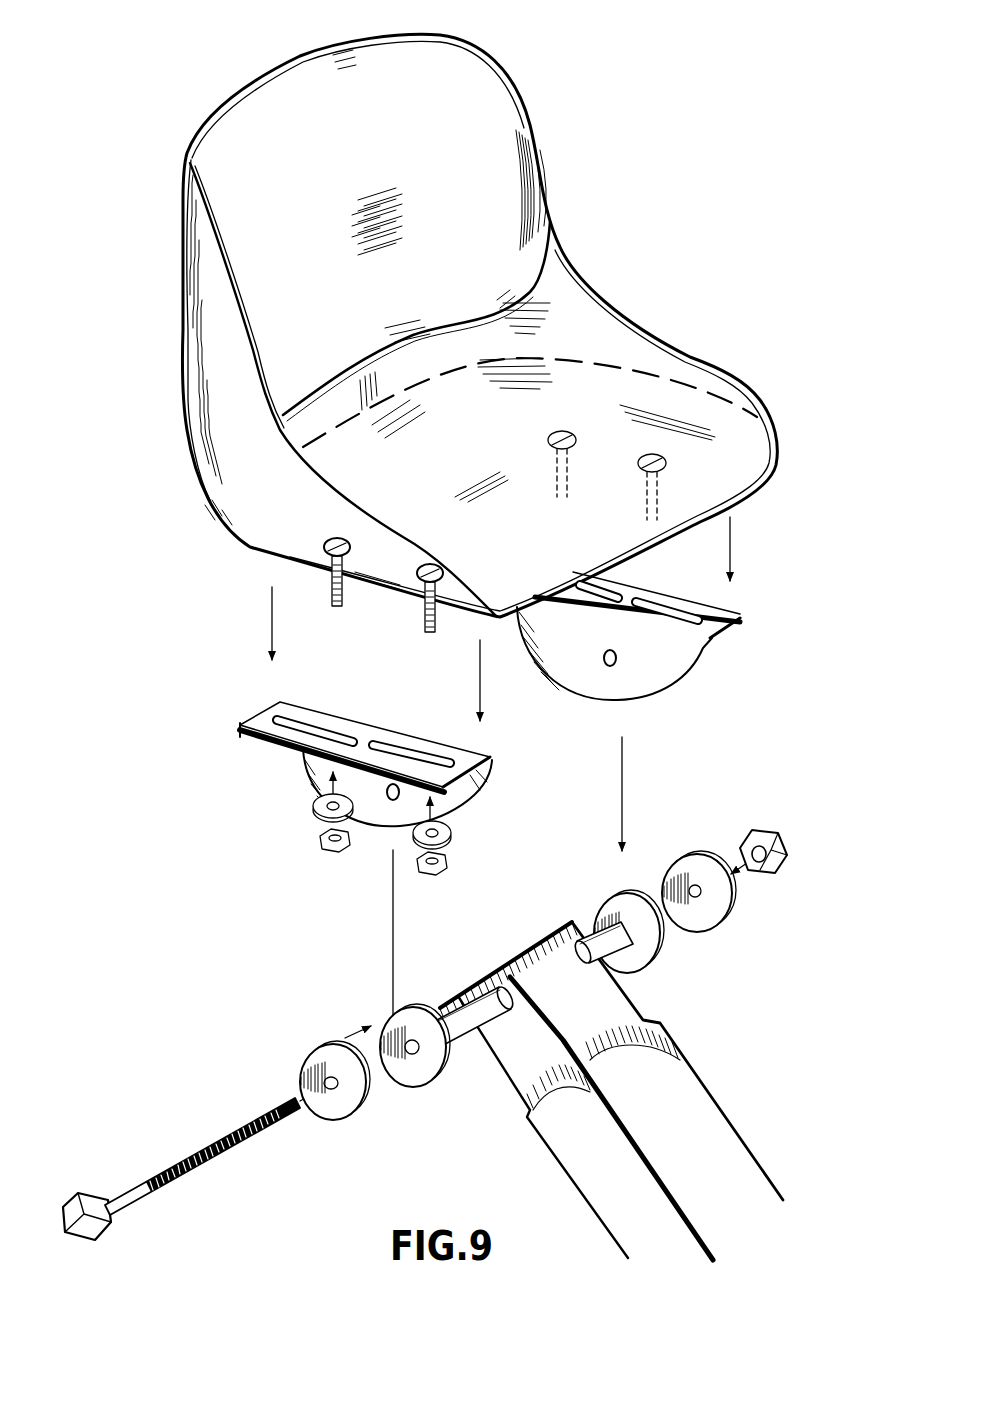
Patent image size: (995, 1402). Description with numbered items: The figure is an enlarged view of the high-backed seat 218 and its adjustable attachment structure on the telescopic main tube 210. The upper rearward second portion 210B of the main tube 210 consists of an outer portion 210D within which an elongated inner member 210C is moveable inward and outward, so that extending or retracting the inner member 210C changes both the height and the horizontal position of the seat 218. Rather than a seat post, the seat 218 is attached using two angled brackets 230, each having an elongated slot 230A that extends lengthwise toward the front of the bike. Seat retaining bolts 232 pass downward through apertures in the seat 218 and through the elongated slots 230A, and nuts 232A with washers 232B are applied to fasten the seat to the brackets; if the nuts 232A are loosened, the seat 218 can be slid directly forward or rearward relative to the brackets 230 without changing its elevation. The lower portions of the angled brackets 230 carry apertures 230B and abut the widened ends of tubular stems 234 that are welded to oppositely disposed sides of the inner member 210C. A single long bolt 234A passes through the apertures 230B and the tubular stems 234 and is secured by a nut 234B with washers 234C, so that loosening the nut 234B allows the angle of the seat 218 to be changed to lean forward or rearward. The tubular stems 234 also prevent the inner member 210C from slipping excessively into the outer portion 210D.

The seat 218 is at (567, 280).
The seat retaining bolts 232 is at (652, 455).
The angled brackets 230 is at (742, 614).
The elongated slots 230A is at (668, 608).
The apertures 230B is at (618, 661).
The nuts 232A is at (320, 847).
The washers 232B is at (313, 805).
The main tube 210 is at (643, 1050).
The second portion 210B is at (500, 1058).
The inner member 210C is at (533, 933).
The outer portion 210D is at (717, 1158).
The tubular stems 234 is at (643, 968).
The long bolt 234A is at (133, 1183).
The nut 234B is at (787, 848).
The washers 234C is at (683, 862).